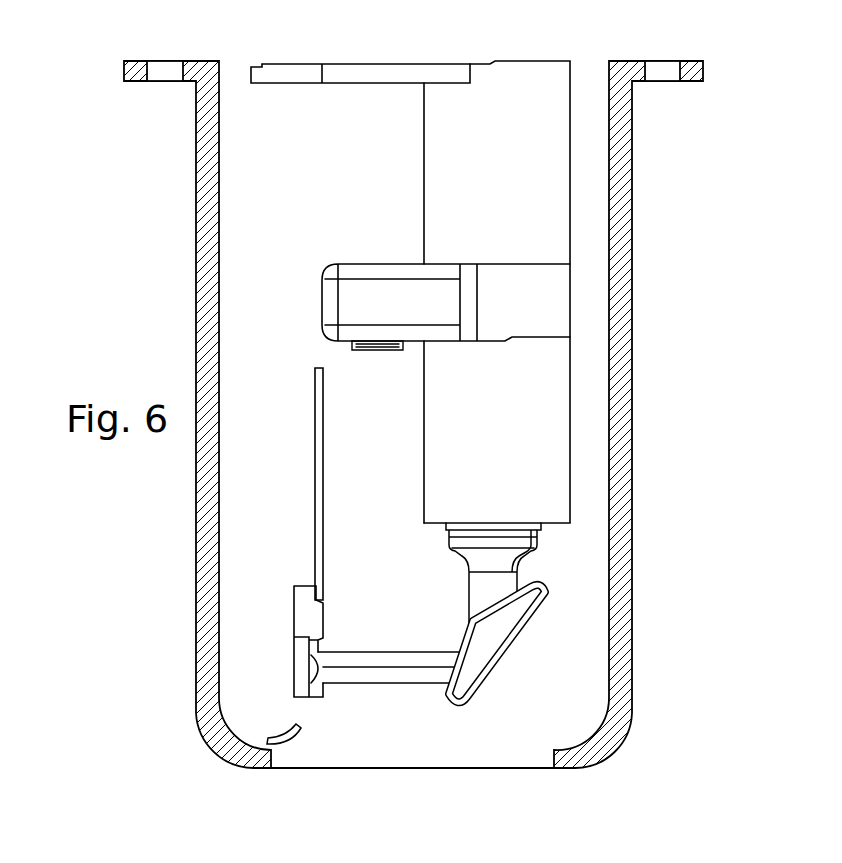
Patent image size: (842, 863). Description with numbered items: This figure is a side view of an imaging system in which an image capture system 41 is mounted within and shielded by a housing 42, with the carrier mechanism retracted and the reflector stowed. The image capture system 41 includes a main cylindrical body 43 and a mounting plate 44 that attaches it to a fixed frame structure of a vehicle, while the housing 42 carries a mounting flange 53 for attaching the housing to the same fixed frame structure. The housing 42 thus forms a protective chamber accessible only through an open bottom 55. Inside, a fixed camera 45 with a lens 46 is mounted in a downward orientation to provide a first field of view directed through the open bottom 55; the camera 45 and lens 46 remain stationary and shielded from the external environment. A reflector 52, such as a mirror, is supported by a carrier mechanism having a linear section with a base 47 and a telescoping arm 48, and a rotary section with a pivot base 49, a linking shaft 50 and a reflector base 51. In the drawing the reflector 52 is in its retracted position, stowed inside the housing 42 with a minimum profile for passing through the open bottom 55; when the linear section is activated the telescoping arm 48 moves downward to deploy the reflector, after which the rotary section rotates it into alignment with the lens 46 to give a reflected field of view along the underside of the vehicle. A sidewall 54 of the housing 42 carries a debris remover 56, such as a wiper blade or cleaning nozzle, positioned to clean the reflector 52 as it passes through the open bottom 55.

The image capture system 41 is at (524, 51).
The housing 42 is at (638, 280).
The main cylindrical body 43 is at (453, 156).
The mounting plate 44 is at (368, 69).
The fixed camera 45 is at (362, 283).
The lens 46 is at (376, 351).
The base 47 is at (445, 438).
The telescoping arm 48 is at (529, 538).
The pivot base 49 is at (493, 647).
The linking shaft 50 is at (391, 684).
The reflector base 51 is at (287, 663).
The reflector 52 is at (322, 538).
The mounting flange 53 is at (135, 65).
The sidewall 54 is at (196, 228).
The open bottom 55 is at (352, 769).
The debris remover 56 is at (302, 734).